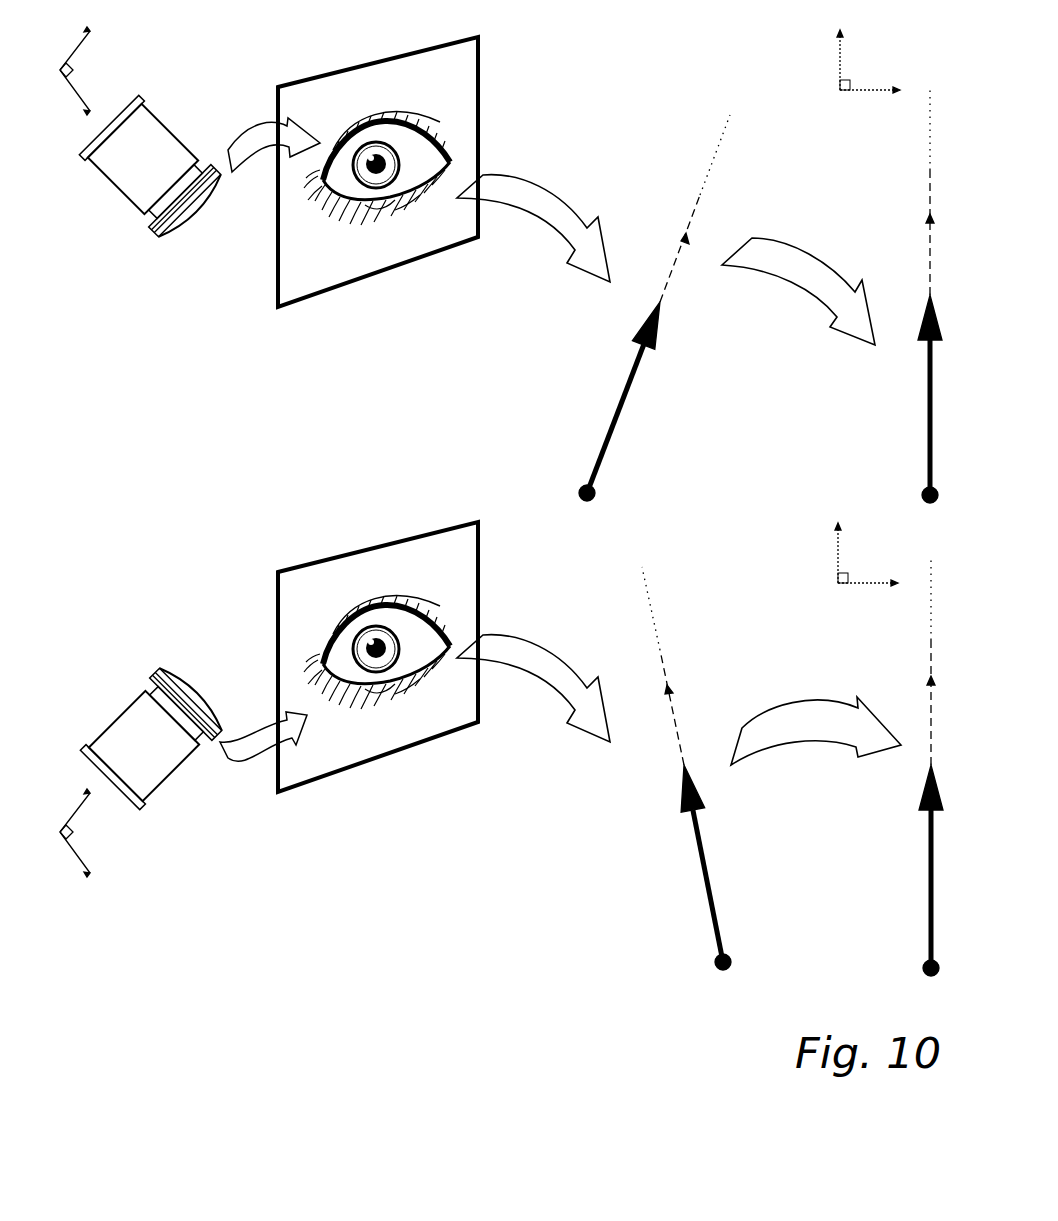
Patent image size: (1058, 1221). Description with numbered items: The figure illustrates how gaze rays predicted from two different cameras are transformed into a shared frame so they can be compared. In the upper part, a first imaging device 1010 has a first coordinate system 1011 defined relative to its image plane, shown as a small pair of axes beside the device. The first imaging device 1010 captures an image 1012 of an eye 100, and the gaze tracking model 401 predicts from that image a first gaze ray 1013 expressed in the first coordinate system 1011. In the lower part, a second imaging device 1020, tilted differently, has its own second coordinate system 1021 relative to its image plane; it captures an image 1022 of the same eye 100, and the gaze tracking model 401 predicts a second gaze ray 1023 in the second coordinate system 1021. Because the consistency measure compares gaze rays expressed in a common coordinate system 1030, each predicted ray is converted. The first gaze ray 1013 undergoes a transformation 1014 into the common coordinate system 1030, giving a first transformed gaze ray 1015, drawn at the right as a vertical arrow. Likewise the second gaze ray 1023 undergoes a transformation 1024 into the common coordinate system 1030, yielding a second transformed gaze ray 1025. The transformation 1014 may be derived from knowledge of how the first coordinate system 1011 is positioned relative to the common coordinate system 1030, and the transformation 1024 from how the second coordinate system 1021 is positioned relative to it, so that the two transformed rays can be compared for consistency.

The eye 100 is at (417, 150).
The gaze tracking model 401 is at (565, 200).
The first imaging device 1010 is at (172, 130).
The first coordinate system 1011 is at (78, 52).
The image 1012 is at (358, 283).
The first gaze ray 1013 is at (615, 410).
The transformation 1014 is at (822, 270).
The first transformed gaze ray 1015 is at (925, 410).
The second imaging device 1020 is at (172, 783).
The second coordinate system 1021 is at (75, 842).
The image 1022 is at (358, 768).
The second gaze ray 1023 is at (700, 842).
The transformation 1024 is at (840, 732).
The second transformed gaze ray 1025 is at (925, 880).
The common coordinate system 1030 is at (860, 90).